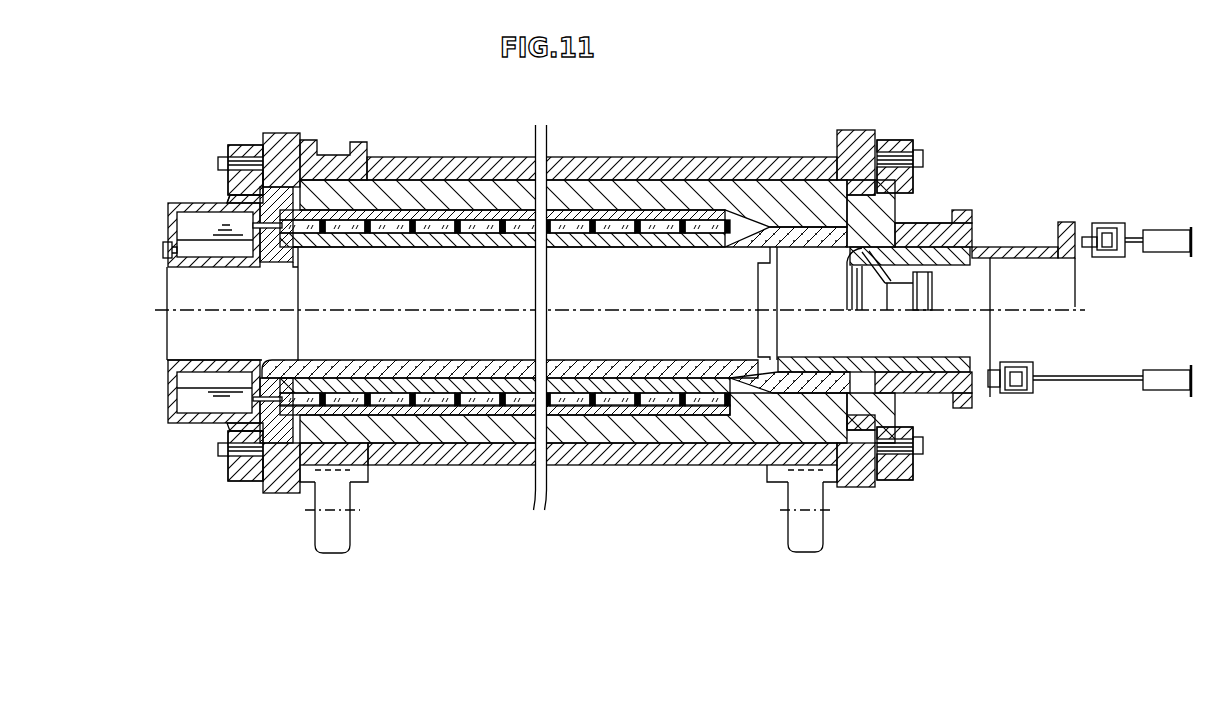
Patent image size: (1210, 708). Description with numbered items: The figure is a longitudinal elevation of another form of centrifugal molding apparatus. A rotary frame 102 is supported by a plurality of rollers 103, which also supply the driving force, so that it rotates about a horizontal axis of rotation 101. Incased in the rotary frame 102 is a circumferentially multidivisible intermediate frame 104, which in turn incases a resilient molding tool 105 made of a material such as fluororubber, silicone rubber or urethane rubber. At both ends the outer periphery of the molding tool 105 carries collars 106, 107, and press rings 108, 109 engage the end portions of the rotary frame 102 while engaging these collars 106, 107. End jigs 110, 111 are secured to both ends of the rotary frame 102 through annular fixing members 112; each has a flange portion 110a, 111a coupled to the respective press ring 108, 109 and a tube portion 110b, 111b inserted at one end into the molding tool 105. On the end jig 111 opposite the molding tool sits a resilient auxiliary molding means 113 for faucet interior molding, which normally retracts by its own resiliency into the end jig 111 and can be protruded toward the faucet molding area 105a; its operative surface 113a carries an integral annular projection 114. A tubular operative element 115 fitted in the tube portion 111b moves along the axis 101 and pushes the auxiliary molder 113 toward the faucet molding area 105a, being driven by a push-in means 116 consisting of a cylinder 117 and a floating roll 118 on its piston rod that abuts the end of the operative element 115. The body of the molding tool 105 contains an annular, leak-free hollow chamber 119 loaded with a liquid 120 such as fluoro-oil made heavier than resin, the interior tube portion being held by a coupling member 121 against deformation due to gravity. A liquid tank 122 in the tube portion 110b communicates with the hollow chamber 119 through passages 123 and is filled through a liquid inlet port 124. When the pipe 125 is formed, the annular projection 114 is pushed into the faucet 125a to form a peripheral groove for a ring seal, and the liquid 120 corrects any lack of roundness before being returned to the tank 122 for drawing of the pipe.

The horizontal axis of rotation 101 is at (583, 310).
The rotary frame 102 is at (690, 157).
The rollers 103 is at (346, 540).
The intermediate frame 104 is at (620, 190).
The resilient molding tool 105 is at (482, 217).
The faucet molding area 105a is at (793, 232).
The collar 106 is at (318, 152).
The collar 107 is at (848, 184).
The press ring 108 is at (278, 187).
The press ring 109 is at (855, 180).
The end jig 110 is at (252, 203).
The flange portion 110a is at (232, 197).
The tube portion 110b is at (292, 262).
The end jig 111 is at (933, 220).
The flange portion 111a is at (928, 216).
The tube portion 111b is at (958, 212).
The annular fixing members 112 is at (236, 147).
The auxiliary molding means 113 is at (930, 285).
The operative surface 113a is at (856, 276).
The annular projection 114 is at (887, 306).
The tubular operative element 115 is at (1020, 227).
The push-in means 116 is at (1163, 222).
The cylinder 117 is at (1163, 248).
The floating roll 118 is at (1108, 237).
The hollow chamber 119 is at (449, 228).
The liquid 120 is at (501, 226).
The coupling member 121 is at (401, 238).
The liquid tank 122 is at (190, 226).
The passages 123 is at (267, 234).
The liquid inlet port 124 is at (166, 252).
The pipe 125 is at (622, 364).
The faucet 125a is at (790, 393).